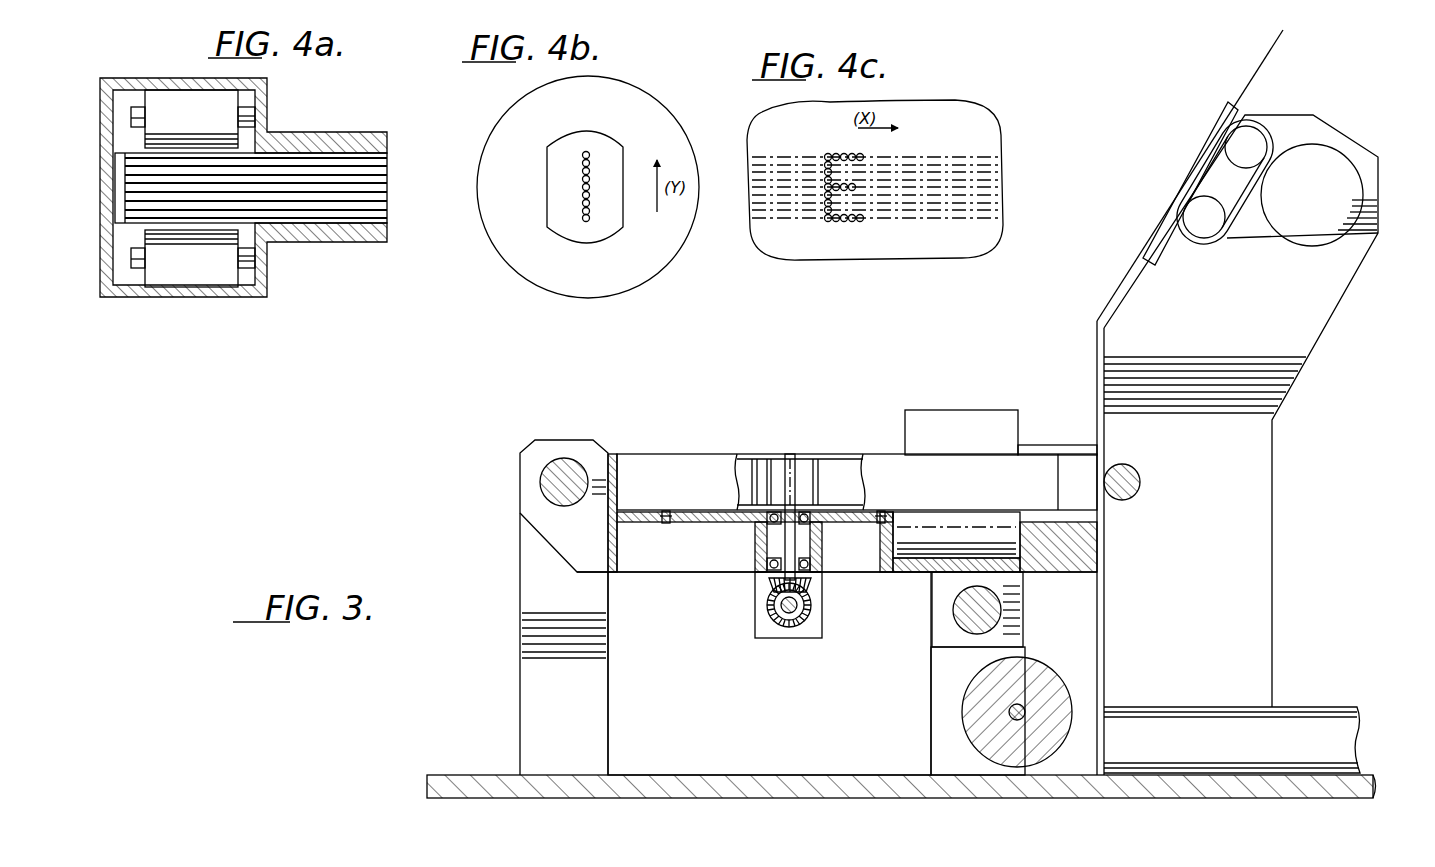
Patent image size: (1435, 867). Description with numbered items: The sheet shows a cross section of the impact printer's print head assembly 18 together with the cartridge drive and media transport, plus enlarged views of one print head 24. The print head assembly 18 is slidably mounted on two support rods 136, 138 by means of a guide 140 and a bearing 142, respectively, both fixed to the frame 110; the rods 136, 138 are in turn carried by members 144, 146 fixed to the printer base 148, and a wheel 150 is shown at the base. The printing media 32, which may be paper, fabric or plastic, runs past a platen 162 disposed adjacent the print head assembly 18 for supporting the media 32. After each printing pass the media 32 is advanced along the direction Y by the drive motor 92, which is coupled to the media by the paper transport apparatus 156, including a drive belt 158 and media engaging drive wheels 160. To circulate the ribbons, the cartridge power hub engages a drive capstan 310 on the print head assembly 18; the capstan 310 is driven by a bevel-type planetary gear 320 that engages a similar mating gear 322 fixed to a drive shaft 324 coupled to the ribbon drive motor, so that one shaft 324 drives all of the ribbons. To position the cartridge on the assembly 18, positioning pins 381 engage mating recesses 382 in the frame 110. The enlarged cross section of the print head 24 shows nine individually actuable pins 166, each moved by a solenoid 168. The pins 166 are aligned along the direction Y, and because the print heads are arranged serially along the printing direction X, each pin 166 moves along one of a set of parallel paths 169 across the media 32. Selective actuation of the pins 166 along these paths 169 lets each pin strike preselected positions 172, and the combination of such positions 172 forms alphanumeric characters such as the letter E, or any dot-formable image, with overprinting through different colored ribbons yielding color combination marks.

In FIG. 3, the print head assembly 18 is at (902, 410).
In FIG. 4a, the print head 24 is at (170, 67).
In FIG. 4b, the print head 24 is at (497, 260).
In FIG. 3, the printing media 32 is at (1255, 75).
In FIG. 3, the drive motor 92 is at (1336, 160).
In FIG. 3, the frame 110 is at (645, 525).
In FIG. 3, the support rod 136 is at (548, 481).
In FIG. 3, the support rod 138 is at (968, 613).
In FIG. 3, the guide 140 is at (565, 415).
In FIG. 3, the bearing 142 is at (936, 608).
In FIG. 3, the member 144 is at (530, 727).
In FIG. 3, the member 146 is at (940, 741).
In FIG. 3, the printer base 148 is at (734, 775).
In FIG. 3, the wheel 150 is at (968, 706).
In FIG. 3, the paper transport apparatus 156 is at (1284, 116).
In FIG. 3, the drive belt 158 is at (1257, 243).
In FIG. 3, the media engaging drive wheels 160 is at (1256, 145).
In FIG. 3, the platen 162 is at (1131, 478).
In FIG. 4a, the pins 166 is at (392, 153).
In FIG. 4b, the pins 166 is at (574, 155).
In FIG. 4a, the solenoid 168 is at (210, 95).
In FIG. 4c, the parallel paths 169 is at (1008, 155).
In FIG. 4c, the preselected positions 172 is at (831, 156).
In FIG. 3, the drive capstan 310 is at (783, 546).
In FIG. 3, the planetary gear 320 is at (770, 590).
In FIG. 3, the mating gear 322 is at (767, 613).
In FIG. 3, the drive shaft 324 is at (797, 605).
In FIG. 3, the positioning pins 381 is at (667, 521).
In FIG. 3, the mating recesses 382 is at (667, 511).